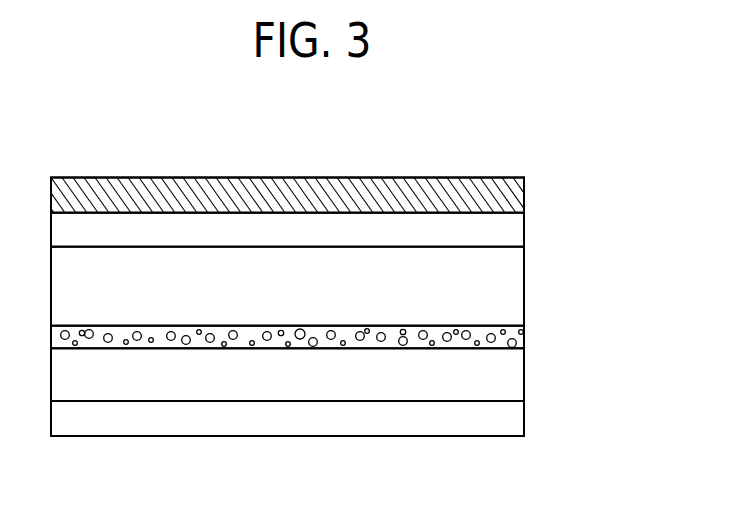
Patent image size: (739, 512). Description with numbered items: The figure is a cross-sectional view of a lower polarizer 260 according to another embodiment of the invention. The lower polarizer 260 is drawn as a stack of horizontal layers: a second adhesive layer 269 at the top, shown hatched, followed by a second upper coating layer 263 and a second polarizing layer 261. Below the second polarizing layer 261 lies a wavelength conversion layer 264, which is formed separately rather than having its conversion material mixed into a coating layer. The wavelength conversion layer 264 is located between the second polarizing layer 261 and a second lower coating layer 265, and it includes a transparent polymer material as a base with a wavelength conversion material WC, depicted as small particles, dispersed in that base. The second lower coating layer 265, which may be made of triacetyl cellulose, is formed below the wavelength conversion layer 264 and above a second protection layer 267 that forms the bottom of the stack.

The lower polarizer 260 is at (625, 187).
The second adhesive layer 269 is at (507, 195).
The second upper coating layer 263 is at (507, 229).
The second polarizing layer 261 is at (505, 291).
The wavelength conversion layer 264 is at (527, 332).
The second lower coating layer 265 is at (505, 377).
The second protection layer 267 is at (505, 419).
The wavelength conversion material WC is at (334, 332).